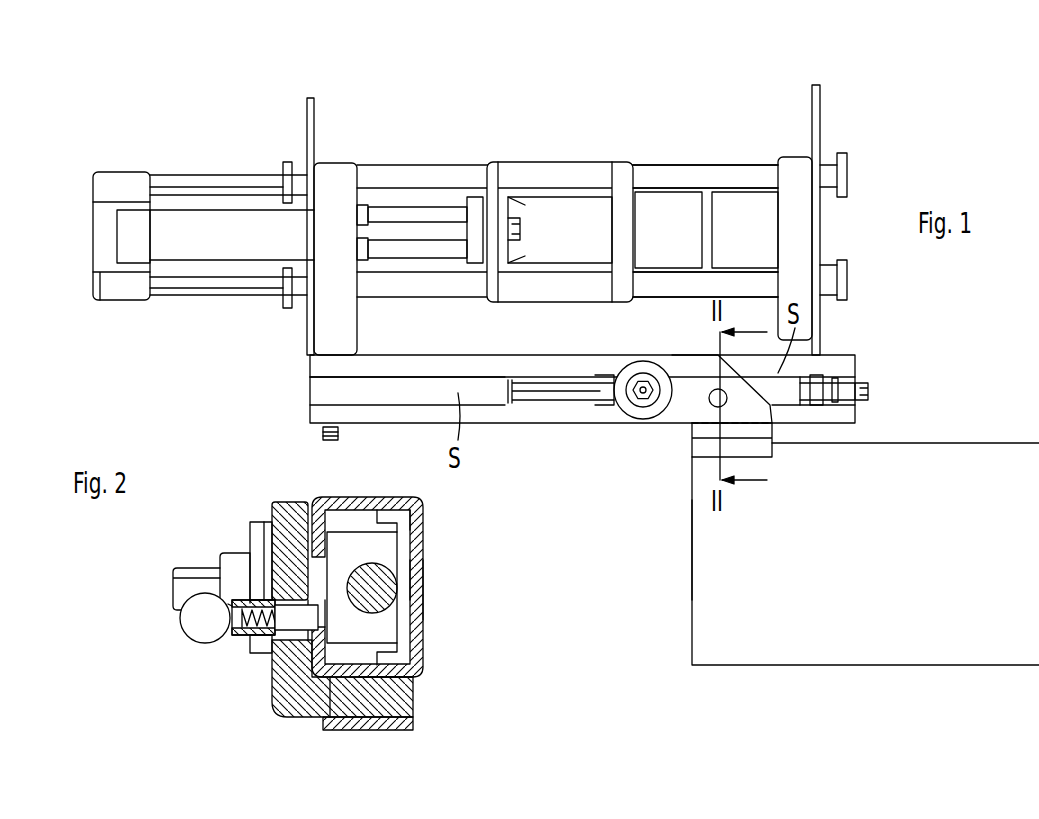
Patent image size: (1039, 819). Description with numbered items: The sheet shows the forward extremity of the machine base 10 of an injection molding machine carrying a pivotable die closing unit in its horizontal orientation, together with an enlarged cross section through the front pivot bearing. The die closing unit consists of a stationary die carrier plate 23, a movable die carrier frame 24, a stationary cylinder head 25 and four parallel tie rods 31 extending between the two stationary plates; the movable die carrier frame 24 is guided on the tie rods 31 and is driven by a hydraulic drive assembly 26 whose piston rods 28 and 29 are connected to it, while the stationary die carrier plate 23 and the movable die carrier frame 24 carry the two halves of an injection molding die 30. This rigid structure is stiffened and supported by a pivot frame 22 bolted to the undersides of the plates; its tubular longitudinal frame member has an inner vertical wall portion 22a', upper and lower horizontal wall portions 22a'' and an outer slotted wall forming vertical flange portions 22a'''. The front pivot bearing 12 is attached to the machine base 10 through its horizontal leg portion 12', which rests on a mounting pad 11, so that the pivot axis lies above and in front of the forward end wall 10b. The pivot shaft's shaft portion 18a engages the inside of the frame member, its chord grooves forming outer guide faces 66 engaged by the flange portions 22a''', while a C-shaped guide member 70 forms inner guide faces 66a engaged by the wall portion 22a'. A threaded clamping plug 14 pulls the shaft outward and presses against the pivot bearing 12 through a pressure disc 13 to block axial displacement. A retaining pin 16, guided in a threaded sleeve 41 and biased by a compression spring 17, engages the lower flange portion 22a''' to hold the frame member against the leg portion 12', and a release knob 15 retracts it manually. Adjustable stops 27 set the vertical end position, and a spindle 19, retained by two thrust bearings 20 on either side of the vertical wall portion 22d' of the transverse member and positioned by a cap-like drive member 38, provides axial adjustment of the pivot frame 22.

In FIG. 1, the machine base 10 is at (692, 630).
In FIG. 1, the forward end wall 10b is at (692, 573).
In FIG. 1, the mounting pad 11 is at (698, 447).
In FIG. 2, the mounting pad 11 is at (403, 723).
In FIG. 1, the front pivot bearing 12 is at (706, 415).
In FIG. 2, the front pivot bearing 12 is at (333, 630).
In FIG. 2, the horizontal leg portion 12' is at (428, 716).
In FIG. 1, the pressure disc 13 is at (640, 407).
In FIG. 2, the pressure disc 13 is at (258, 540).
In FIG. 1, the clamping plug 14 is at (632, 395).
In FIG. 2, the clamping plug 14 is at (240, 568).
In FIG. 1, the release knob 15 is at (727, 403).
In FIG. 2, the release knob 15 is at (200, 620).
In FIG. 2, the retaining pin 16 is at (290, 620).
In FIG. 2, the compression spring 17 is at (240, 640).
In FIG. 2, the shaft portion 18a is at (380, 627).
In FIG. 1, the spindle 19 is at (525, 395).
In FIG. 2, the spindle 19 is at (375, 595).
In FIG. 1, the thrust bearing 20 is at (790, 372).
In FIG. 1, the pivot frame 22 is at (440, 352).
In FIG. 2, the pivot frame 22 is at (431, 545).
In FIG. 2, the inner vertical wall portion 22a' is at (464, 590).
In FIG. 2, the horizontal wall portion 22a'' is at (446, 696).
In FIG. 1, the vertical flange portion 22a''' is at (585, 398).
In FIG. 2, the vertical flange portion 22a''' is at (238, 675).
In FIG. 1, the vertical wall portion 22d' is at (834, 423).
In FIG. 1, the stationary die carrier plate 23 is at (790, 170).
In FIG. 1, the movable die carrier frame 24 is at (618, 168).
In FIG. 1, the stationary cylinder head 25 is at (333, 183).
In FIG. 1, the hydraulic drive assembly 26 is at (245, 222).
In FIG. 1, the adjustable stop 27 is at (330, 440).
In FIG. 1, the piston rod 28 is at (440, 212).
In FIG. 1, the piston rod 29 is at (400, 230).
In FIG. 1, the injection molding die 30 is at (741, 205).
In FIG. 1, the tie rod 31 is at (658, 170).
In FIG. 1, the drive member 38 is at (872, 385).
In FIG. 2, the threaded sleeve 41 is at (225, 605).
In FIG. 2, the outer guide face 66 is at (328, 620).
In FIG. 2, the inner guide face 66a is at (412, 572).
In FIG. 1, the guide member 70 is at (608, 376).
In FIG. 2, the guide member 70 is at (415, 513).